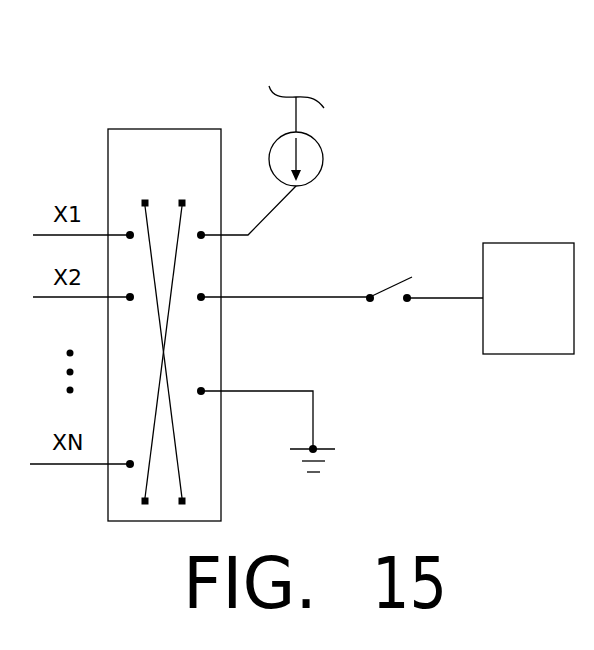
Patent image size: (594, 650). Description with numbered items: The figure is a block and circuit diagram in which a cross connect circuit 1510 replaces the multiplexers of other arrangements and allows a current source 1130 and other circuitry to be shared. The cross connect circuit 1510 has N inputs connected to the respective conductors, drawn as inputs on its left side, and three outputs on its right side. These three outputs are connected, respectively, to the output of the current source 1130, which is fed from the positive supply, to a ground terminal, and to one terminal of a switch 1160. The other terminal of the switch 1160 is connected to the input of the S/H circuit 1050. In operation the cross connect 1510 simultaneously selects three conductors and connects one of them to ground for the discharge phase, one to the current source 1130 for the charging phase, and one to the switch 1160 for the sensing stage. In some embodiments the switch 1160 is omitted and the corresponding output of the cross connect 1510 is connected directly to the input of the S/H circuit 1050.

The cross connect circuit 1510 is at (165, 129).
The current source 1130 is at (324, 162).
The switch 1160 is at (389, 300).
The S/H circuit 1050 is at (555, 324).